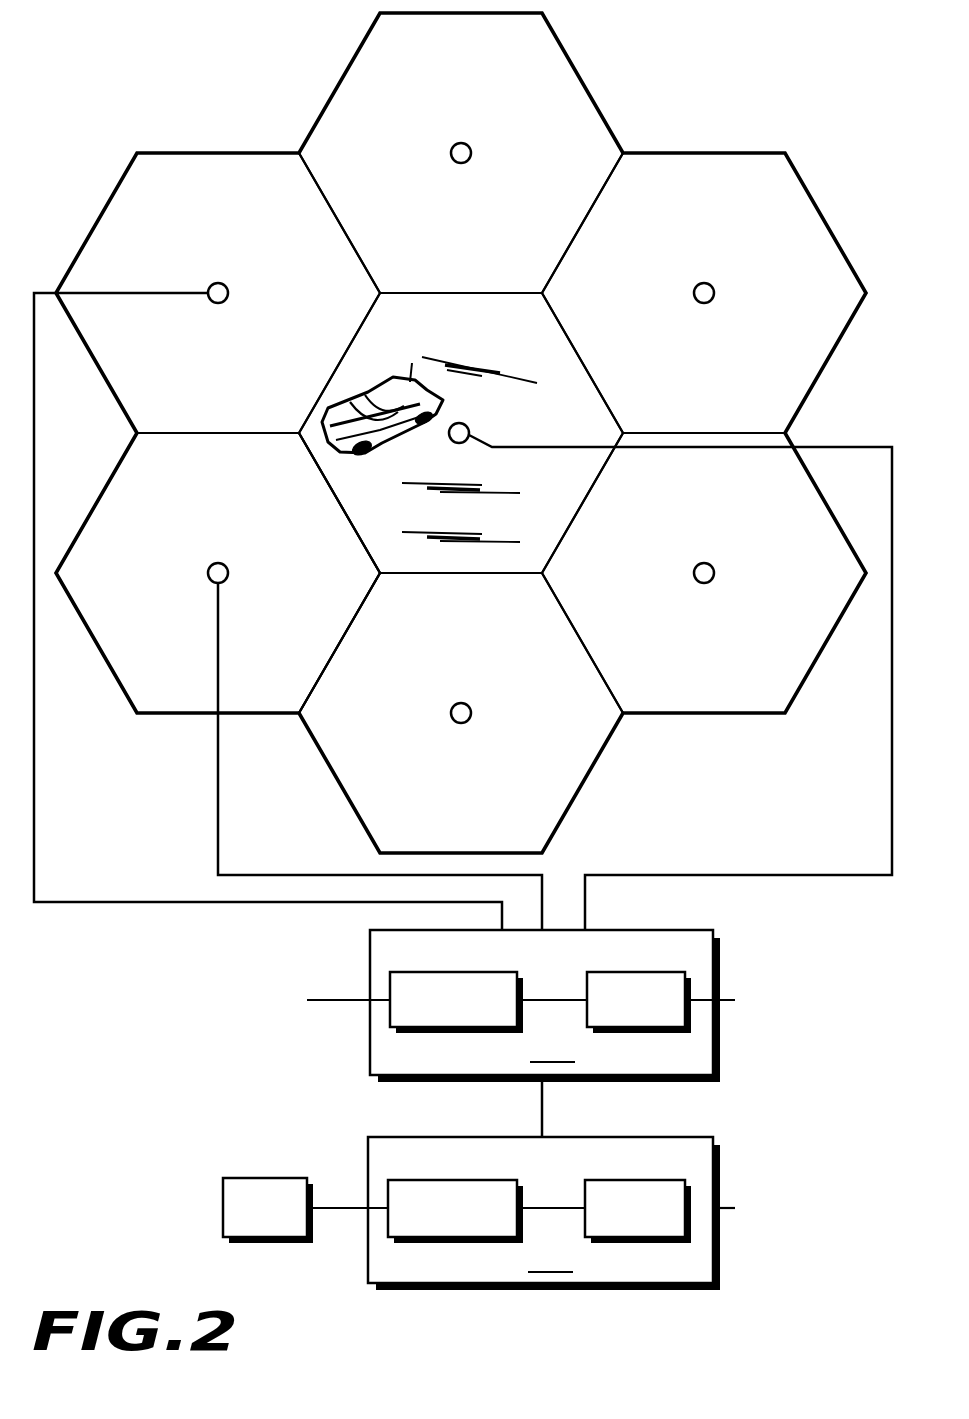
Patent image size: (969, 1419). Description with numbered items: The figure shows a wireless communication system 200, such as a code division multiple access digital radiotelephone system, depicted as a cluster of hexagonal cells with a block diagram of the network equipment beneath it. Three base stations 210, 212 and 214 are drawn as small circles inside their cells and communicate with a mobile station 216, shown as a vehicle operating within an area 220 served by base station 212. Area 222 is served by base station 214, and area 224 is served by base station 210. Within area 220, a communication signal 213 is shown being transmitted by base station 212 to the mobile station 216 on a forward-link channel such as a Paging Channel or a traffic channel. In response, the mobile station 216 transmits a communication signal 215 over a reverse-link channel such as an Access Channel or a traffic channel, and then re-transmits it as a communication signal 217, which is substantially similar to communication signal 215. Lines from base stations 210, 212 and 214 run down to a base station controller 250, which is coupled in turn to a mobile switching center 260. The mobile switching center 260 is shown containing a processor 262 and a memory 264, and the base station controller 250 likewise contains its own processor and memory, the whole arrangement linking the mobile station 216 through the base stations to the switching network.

The wireless communication system 200 is at (117, 1278).
The base station 210 is at (225, 283).
The base station 212 is at (470, 424).
The communication signal 213 is at (450, 363).
The base station 214 is at (226, 563).
The communication signal 215 is at (496, 491).
The mobile station 216 is at (389, 392).
The communication signal 217 is at (496, 540).
The area 220 is at (552, 338).
The area 222 is at (197, 466).
The area 224 is at (190, 189).
The base station controller 250 is at (472, 1006).
The mobile switching center 260 is at (500, 1186).
The processor 262 is at (453, 1034).
The memory 264 is at (638, 1034).